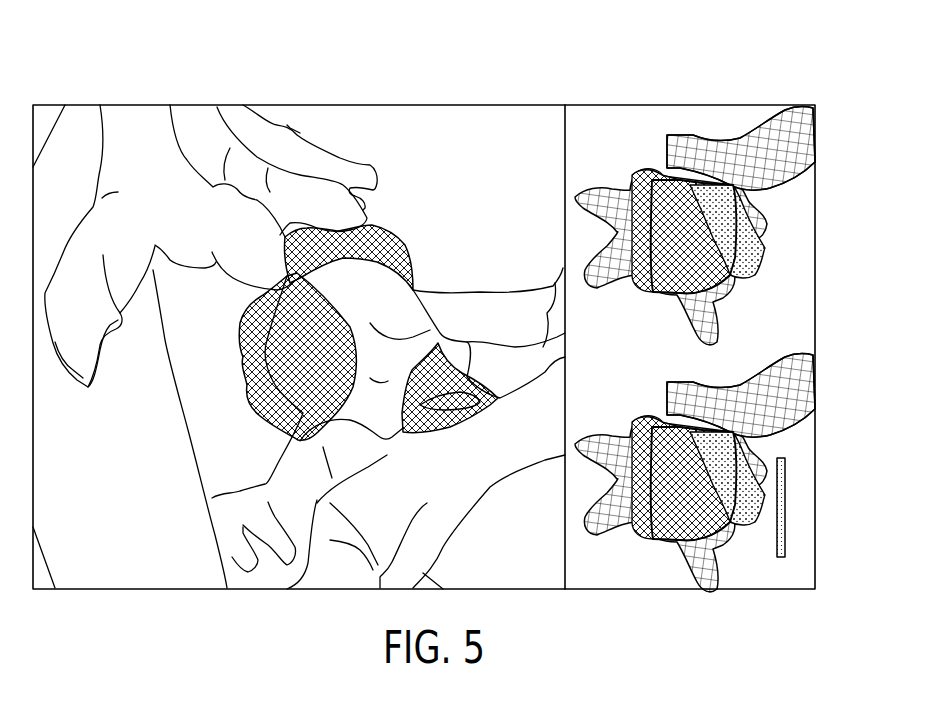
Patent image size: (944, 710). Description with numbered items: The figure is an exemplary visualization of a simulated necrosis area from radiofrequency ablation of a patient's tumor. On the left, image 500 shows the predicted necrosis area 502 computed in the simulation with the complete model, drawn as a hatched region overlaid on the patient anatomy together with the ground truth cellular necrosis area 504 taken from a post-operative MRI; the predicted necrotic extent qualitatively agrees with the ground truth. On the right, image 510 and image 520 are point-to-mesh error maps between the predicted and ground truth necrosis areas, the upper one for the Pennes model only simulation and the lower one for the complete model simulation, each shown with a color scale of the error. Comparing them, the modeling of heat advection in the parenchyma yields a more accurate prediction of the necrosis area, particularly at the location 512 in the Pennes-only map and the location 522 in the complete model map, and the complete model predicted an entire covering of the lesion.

The image 500 is at (93, 89).
The predicted necrosis area 502 is at (387, 395).
The ground truth cellular necrosis area 504 is at (397, 250).
The image 510 is at (822, 361).
The location 512 is at (634, 289).
The image 520 is at (822, 530).
The location 522 is at (648, 532).